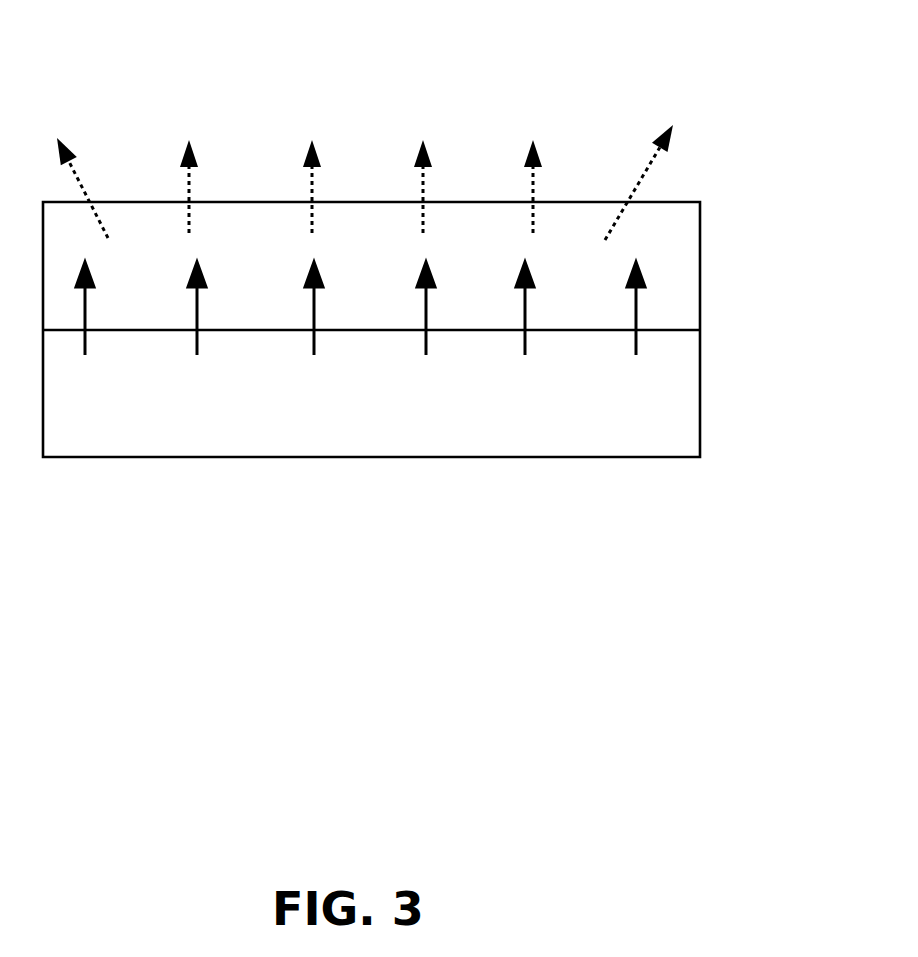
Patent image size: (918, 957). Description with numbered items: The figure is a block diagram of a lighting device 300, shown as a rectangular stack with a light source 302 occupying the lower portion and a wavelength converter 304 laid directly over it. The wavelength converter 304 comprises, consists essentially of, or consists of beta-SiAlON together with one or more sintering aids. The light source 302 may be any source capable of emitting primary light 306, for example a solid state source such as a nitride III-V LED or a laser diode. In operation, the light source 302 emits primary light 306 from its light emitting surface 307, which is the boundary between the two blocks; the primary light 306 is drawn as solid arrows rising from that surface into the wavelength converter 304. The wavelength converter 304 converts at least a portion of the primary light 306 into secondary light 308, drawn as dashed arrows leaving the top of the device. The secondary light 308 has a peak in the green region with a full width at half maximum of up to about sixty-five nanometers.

The lighting device 300 is at (107, 74).
The light source 302 is at (393, 404).
The wavelength converter 304 is at (393, 278).
The primary light 306 is at (652, 294).
The light emitting surface 307 is at (679, 321).
The secondary light 308 is at (689, 107).